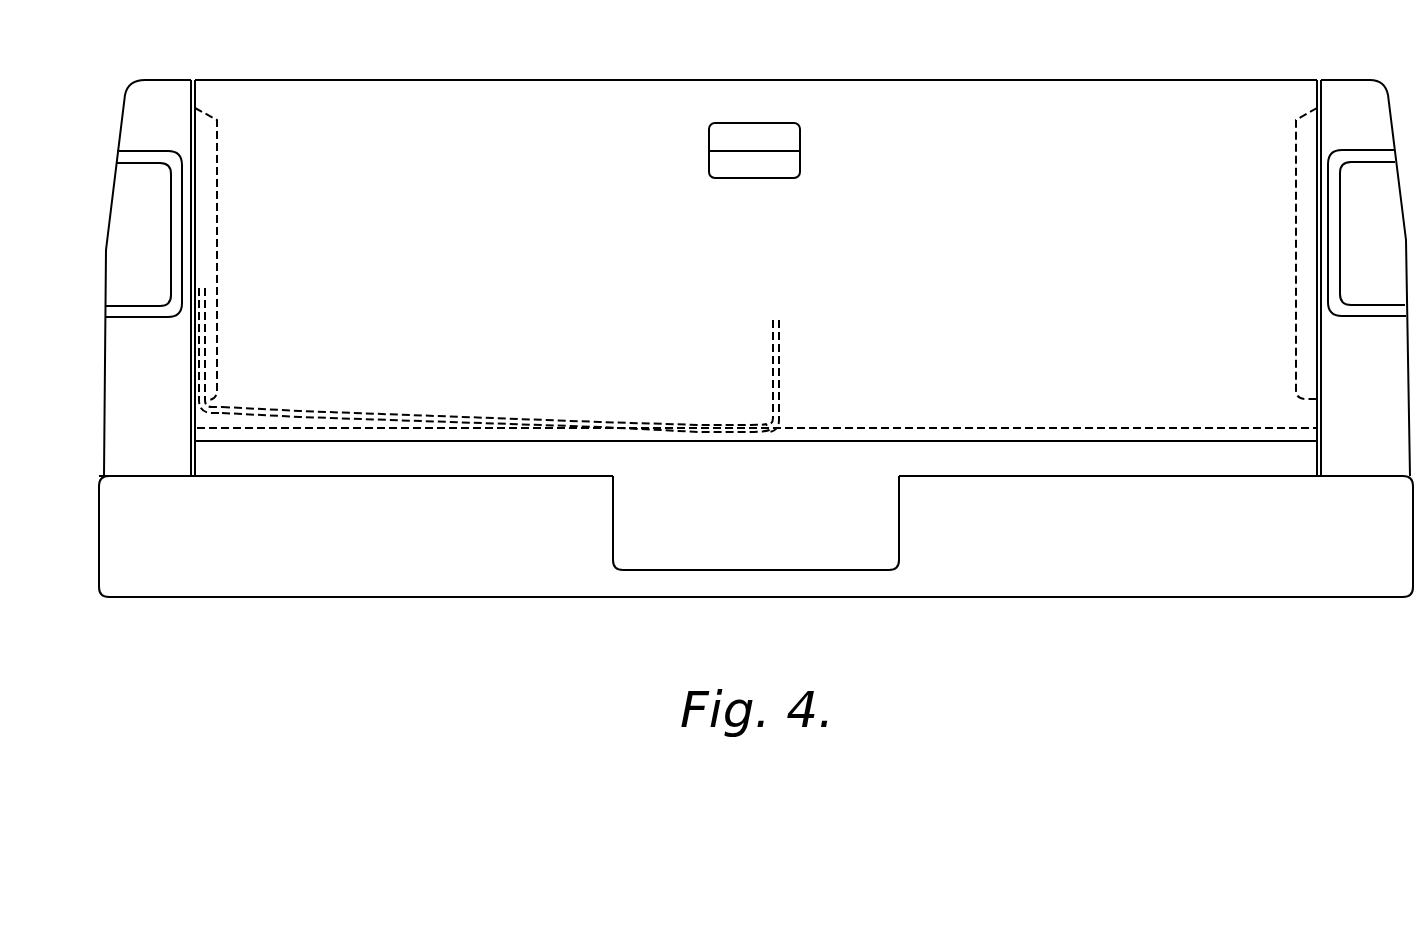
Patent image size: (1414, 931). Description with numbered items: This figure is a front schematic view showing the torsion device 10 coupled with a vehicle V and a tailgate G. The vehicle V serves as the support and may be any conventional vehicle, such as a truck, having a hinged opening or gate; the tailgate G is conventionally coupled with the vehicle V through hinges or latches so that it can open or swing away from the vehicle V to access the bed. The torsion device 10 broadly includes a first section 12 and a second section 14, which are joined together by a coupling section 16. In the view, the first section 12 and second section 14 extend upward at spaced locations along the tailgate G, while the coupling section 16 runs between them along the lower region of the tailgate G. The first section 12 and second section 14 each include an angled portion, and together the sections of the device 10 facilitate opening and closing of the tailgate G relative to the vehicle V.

The vehicle V is at (145, 97).
The tailgate G is at (1097, 92).
The torsion device 10 is at (546, 358).
The first section 12 is at (218, 316).
The second section 14 is at (796, 357).
The coupling section 16 is at (386, 415).